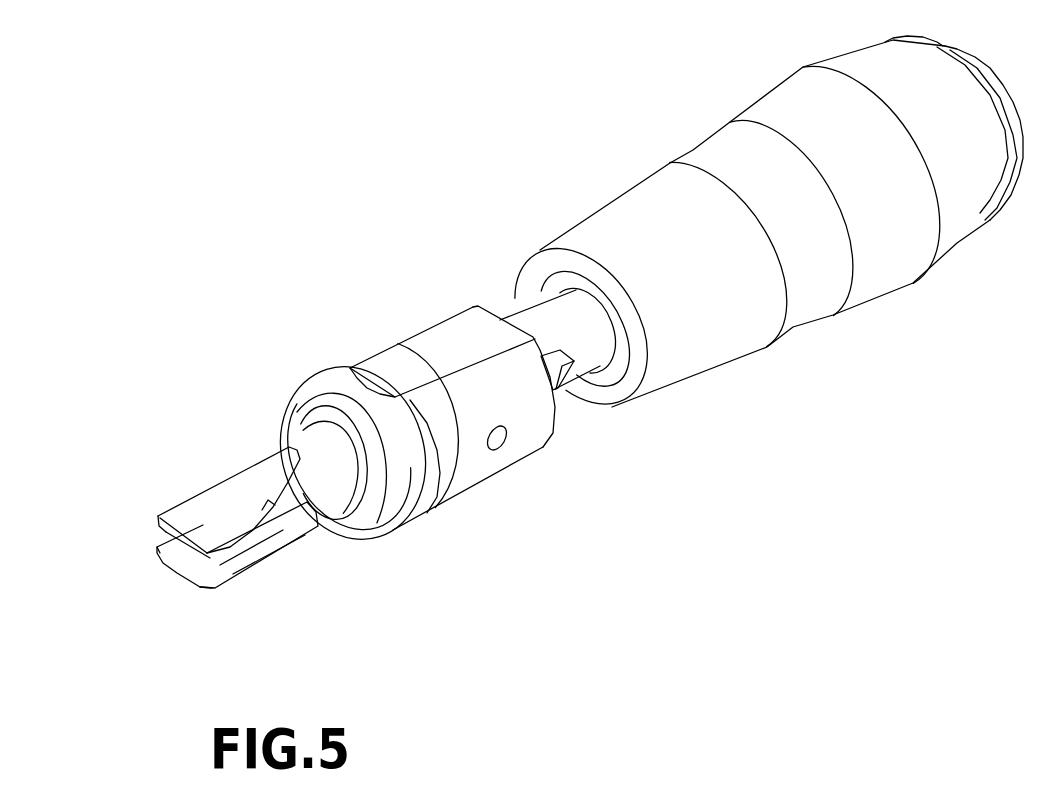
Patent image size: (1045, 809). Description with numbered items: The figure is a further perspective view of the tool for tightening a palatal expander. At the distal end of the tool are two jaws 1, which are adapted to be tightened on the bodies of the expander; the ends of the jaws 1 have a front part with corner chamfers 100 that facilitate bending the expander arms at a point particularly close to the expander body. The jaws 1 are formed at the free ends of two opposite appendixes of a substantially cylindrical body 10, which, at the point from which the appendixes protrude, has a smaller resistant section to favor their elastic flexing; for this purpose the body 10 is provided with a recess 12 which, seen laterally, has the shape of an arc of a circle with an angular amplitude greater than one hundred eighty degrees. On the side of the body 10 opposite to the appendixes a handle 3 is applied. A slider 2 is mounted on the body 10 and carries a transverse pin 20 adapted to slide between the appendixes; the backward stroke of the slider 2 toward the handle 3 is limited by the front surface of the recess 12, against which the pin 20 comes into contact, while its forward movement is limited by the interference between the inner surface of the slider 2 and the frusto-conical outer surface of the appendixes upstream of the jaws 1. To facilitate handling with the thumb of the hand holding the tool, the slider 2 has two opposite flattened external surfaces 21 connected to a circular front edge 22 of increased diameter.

The jaws 1 is at (222, 494).
The corner chamfers 100 is at (162, 521).
The slider 2 is at (380, 335).
The transverse pin 20 is at (502, 443).
The flattened external surfaces 21 is at (458, 345).
The circular front edge 22 is at (317, 390).
The body 10 is at (540, 320).
The recess 12 is at (575, 397).
The handle 3 is at (887, 272).